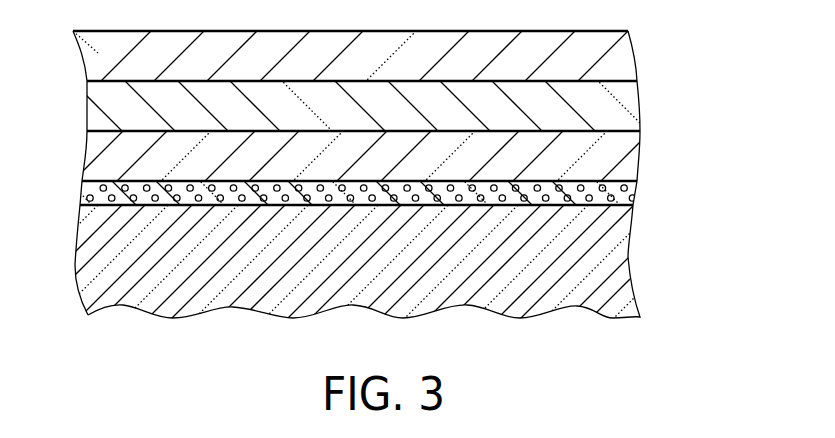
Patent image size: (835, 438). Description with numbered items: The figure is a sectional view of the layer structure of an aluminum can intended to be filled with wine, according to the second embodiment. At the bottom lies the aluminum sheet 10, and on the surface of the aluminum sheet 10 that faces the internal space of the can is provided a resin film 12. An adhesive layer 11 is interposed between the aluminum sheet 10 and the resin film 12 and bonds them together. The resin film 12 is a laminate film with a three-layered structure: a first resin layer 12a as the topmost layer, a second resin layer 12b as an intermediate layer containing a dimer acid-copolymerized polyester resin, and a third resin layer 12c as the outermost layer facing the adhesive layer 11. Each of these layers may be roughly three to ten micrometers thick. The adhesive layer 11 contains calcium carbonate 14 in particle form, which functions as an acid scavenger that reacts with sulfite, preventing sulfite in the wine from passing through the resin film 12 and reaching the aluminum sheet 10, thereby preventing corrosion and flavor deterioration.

The aluminum sheet 10 is at (627, 257).
The adhesive layer 11 is at (632, 183).
The resin film 12 is at (409, 106).
The first resin layer 12a is at (625, 57).
The second resin layer 12b is at (632, 108).
The third resin layer 12c is at (632, 155).
The calcium carbonate 14 is at (85, 192).